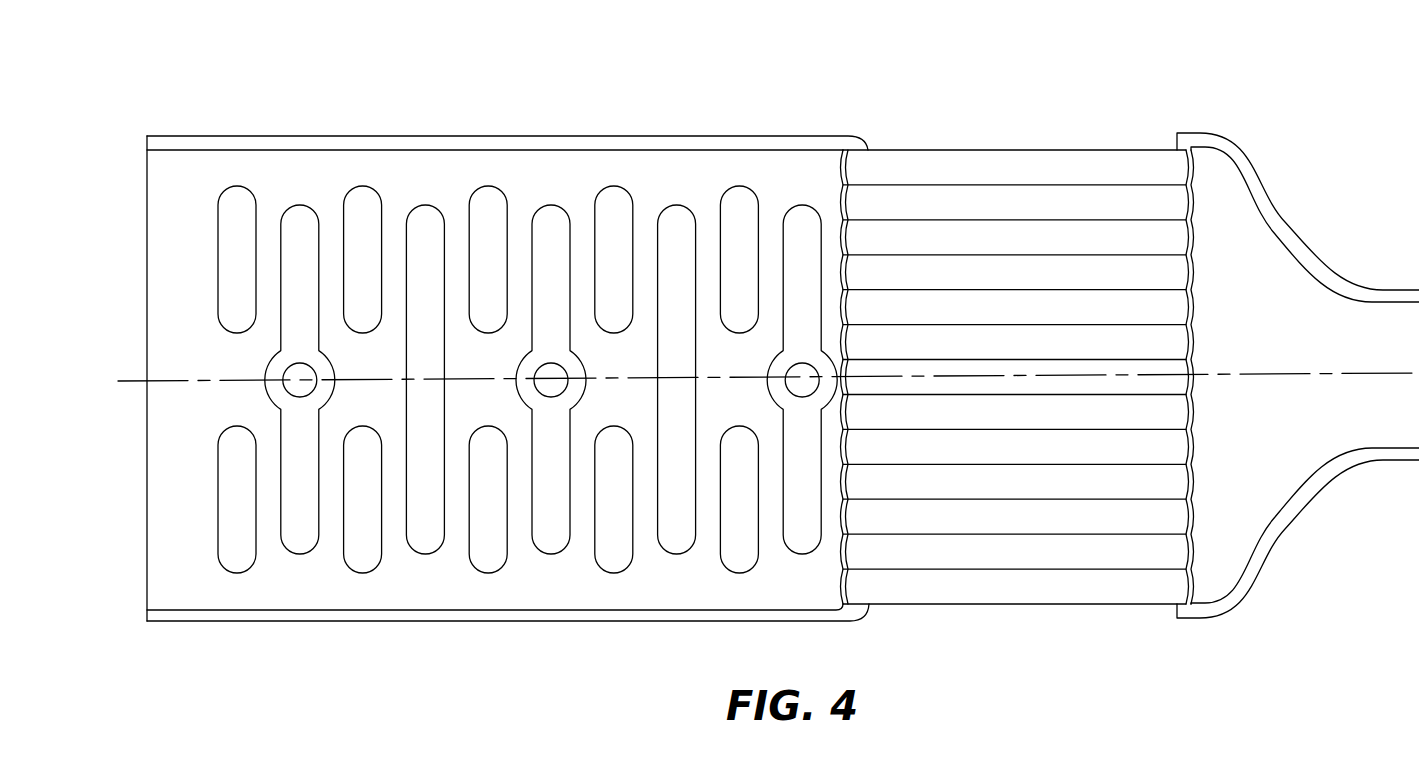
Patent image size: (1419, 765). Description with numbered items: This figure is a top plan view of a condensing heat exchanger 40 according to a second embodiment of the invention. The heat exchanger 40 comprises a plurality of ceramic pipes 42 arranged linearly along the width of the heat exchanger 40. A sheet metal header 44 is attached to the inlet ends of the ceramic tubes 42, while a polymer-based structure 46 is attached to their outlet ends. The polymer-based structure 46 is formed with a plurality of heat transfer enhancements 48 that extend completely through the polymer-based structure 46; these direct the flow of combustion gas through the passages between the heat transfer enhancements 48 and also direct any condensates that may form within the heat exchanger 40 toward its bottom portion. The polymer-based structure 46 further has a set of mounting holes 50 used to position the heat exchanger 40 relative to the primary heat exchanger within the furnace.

The heat exchanger 40 is at (560, 70).
The ceramic pipes 42 is at (1180, 270).
The sheet metal header 44 is at (1272, 522).
The polymer-based structure 46 is at (160, 586).
The heat transfer enhancements 48 is at (237, 186).
The mounting holes 50 is at (312, 368).